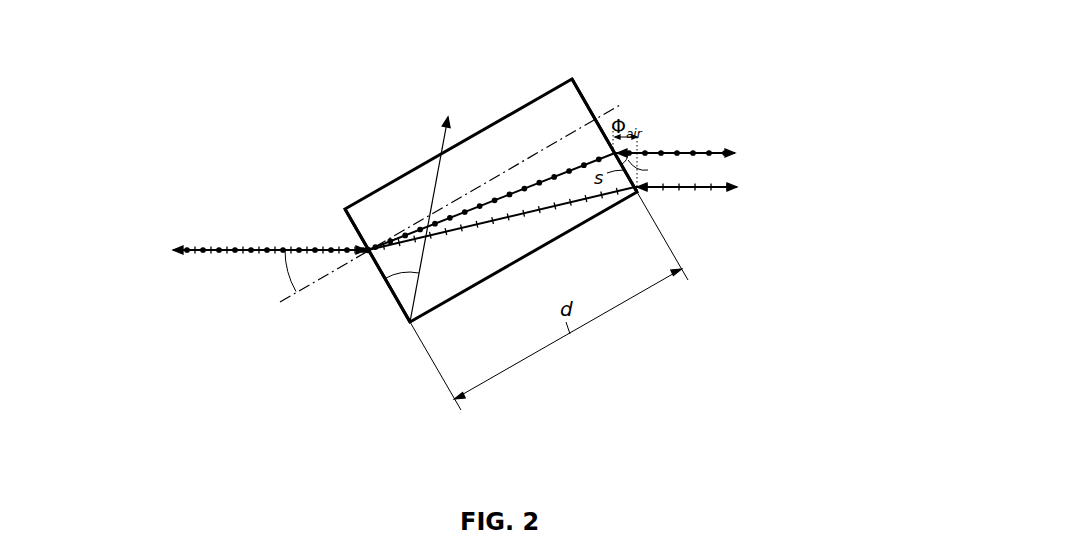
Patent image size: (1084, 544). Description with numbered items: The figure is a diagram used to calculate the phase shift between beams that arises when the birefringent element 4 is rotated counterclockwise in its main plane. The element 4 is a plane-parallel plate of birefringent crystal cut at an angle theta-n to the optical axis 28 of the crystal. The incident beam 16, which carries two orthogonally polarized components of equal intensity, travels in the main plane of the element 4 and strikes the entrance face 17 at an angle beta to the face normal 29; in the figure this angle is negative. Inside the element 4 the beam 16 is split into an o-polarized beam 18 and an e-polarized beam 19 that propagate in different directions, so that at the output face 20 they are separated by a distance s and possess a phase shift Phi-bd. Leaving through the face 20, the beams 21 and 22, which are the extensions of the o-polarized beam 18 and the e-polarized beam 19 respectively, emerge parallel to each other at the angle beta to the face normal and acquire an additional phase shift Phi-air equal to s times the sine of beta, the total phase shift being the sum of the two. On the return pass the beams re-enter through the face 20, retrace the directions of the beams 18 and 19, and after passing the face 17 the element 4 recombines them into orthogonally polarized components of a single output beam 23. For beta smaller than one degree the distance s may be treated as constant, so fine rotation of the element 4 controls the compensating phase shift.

The birefringent element 4 is at (546, 250).
The incident beam 16 is at (360, 249).
The entrance face 17 is at (381, 272).
The o-polarized beam 18 is at (498, 196).
The e-polarized beam 19 is at (580, 199).
The output face 20 is at (580, 91).
The first exit beam 21 is at (648, 152).
The second exit beam 22 is at (710, 186).
The output beam 23 is at (187, 250).
The optical axis 28 is at (404, 328).
The face normal 29 is at (323, 277).